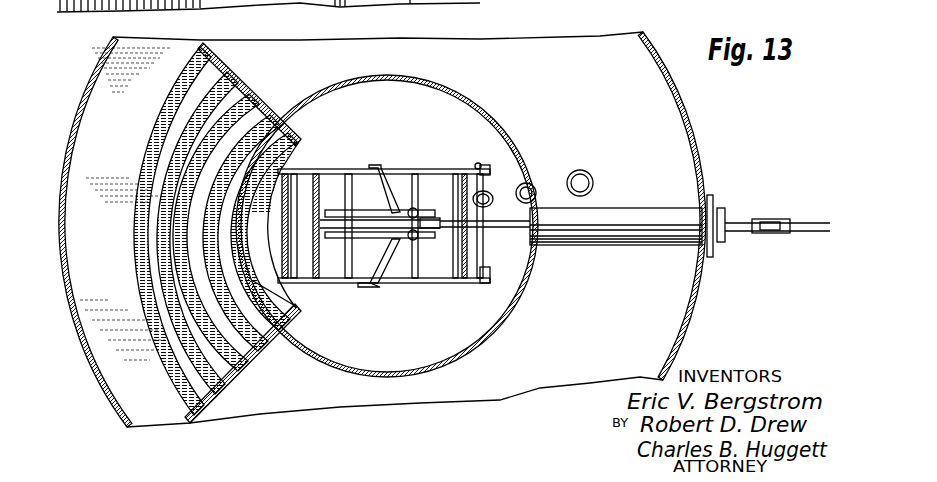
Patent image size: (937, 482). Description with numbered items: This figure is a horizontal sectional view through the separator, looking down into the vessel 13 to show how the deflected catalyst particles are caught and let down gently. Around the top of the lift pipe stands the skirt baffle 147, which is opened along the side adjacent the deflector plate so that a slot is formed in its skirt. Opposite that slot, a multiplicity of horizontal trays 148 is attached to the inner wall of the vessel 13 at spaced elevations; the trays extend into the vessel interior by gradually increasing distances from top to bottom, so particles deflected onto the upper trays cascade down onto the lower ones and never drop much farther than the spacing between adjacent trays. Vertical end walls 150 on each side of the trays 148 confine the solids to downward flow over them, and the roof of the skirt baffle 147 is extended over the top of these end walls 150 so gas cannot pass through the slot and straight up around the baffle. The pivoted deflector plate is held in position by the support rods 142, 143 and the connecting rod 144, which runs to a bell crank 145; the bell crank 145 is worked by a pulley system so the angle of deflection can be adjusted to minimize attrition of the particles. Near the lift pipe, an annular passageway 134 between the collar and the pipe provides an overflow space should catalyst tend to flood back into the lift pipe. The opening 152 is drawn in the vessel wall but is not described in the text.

The vessel 13 is at (680, 95).
The annular passageway 134 is at (383, 211).
The support rod 142 is at (406, 238).
The support rod 143 is at (388, 169).
The connecting rod 144 is at (525, 279).
The bell crank 145 is at (822, 207).
The skirt baffle 147 is at (494, 121).
The horizontal trays 148 is at (222, 384).
The vertical end walls 150 is at (252, 88).
The opening 152 is at (590, 174).